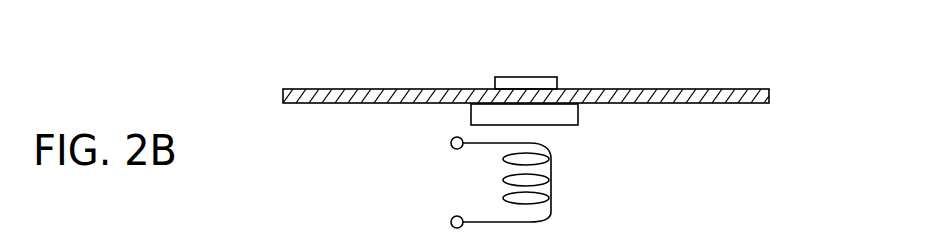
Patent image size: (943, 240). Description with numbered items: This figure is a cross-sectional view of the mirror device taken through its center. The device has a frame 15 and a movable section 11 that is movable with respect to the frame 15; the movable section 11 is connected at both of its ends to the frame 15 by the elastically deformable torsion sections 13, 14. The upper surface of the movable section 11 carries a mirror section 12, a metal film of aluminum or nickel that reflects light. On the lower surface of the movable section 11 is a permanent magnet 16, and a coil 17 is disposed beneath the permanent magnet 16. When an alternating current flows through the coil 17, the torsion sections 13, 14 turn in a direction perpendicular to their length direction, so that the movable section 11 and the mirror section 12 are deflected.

The movable section 11 is at (558, 93).
The mirror section 12 is at (514, 84).
The torsion section 13 is at (413, 93).
The torsion section 14 is at (632, 91).
The frame 15 is at (744, 91).
The permanent magnet 16 is at (579, 115).
The coil 17 is at (551, 183).